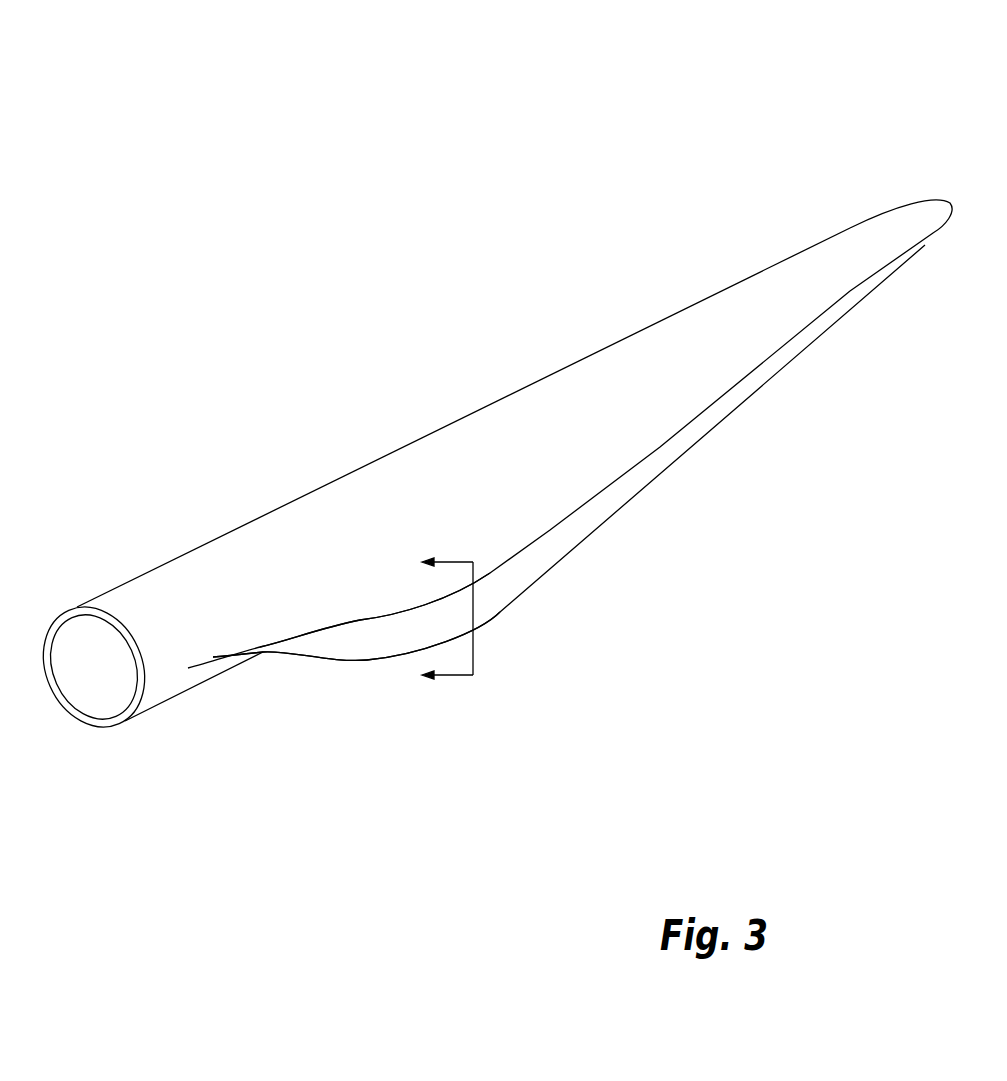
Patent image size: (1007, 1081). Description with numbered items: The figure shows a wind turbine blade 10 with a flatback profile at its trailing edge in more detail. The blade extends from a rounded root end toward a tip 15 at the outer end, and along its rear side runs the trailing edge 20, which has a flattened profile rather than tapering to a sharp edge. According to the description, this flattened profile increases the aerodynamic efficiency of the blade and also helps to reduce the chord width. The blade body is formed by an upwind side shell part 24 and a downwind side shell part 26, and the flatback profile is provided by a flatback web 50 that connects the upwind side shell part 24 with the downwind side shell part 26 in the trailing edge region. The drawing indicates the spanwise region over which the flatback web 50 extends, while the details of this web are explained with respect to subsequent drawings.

The wind turbine blade 10 is at (369, 743).
The blade tip 15 is at (945, 195).
The trailing edge 20 is at (657, 449).
The upwind side shell part 24 is at (600, 383).
The downwind side shell part 26 is at (150, 700).
The flatback web 50 is at (533, 553).